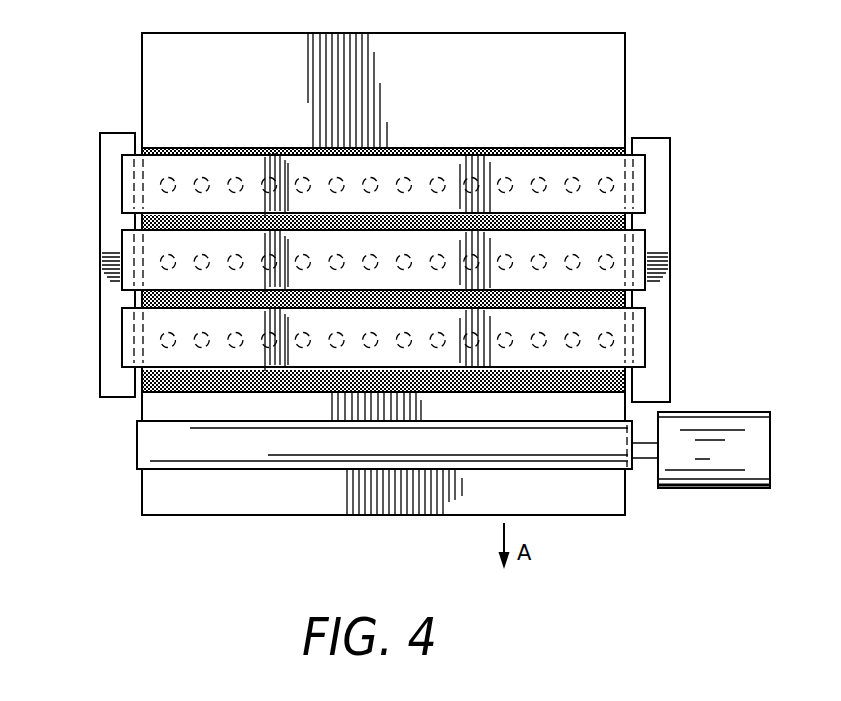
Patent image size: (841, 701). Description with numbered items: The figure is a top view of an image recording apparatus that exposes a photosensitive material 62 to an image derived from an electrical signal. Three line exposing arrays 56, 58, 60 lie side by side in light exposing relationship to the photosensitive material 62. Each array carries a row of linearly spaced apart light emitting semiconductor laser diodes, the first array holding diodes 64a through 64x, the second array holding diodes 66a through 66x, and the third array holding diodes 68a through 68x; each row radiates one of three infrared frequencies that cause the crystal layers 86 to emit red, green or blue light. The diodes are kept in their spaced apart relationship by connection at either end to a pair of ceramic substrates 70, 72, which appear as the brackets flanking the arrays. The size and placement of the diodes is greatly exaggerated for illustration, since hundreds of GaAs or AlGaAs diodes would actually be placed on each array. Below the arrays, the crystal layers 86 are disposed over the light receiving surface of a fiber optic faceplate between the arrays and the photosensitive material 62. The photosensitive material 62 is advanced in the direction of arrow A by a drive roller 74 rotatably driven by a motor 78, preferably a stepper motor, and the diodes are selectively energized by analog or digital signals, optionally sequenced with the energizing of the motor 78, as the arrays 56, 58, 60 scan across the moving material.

The photosensitive material 62 is at (535, 77).
The ceramic substrate 70 is at (648, 142).
The ceramic substrate 72 is at (113, 143).
The line exposing array 56 is at (640, 172).
The line exposing array 58 is at (638, 246).
The line exposing array 60 is at (637, 330).
The light emitting semiconductor laser diode 64a is at (160, 190).
The light emitting semiconductor laser diode 64x is at (615, 193).
The light emitting semiconductor laser diode 66a is at (158, 259).
The light emitting semiconductor laser diode 66x is at (614, 268).
The light emitting semiconductor laser diode 68a is at (160, 340).
The light emitting semiconductor laser diode 68x is at (614, 346).
The crystal layers 86 is at (141, 383).
The drive roller 74 is at (160, 443).
The motor 78 is at (740, 425).